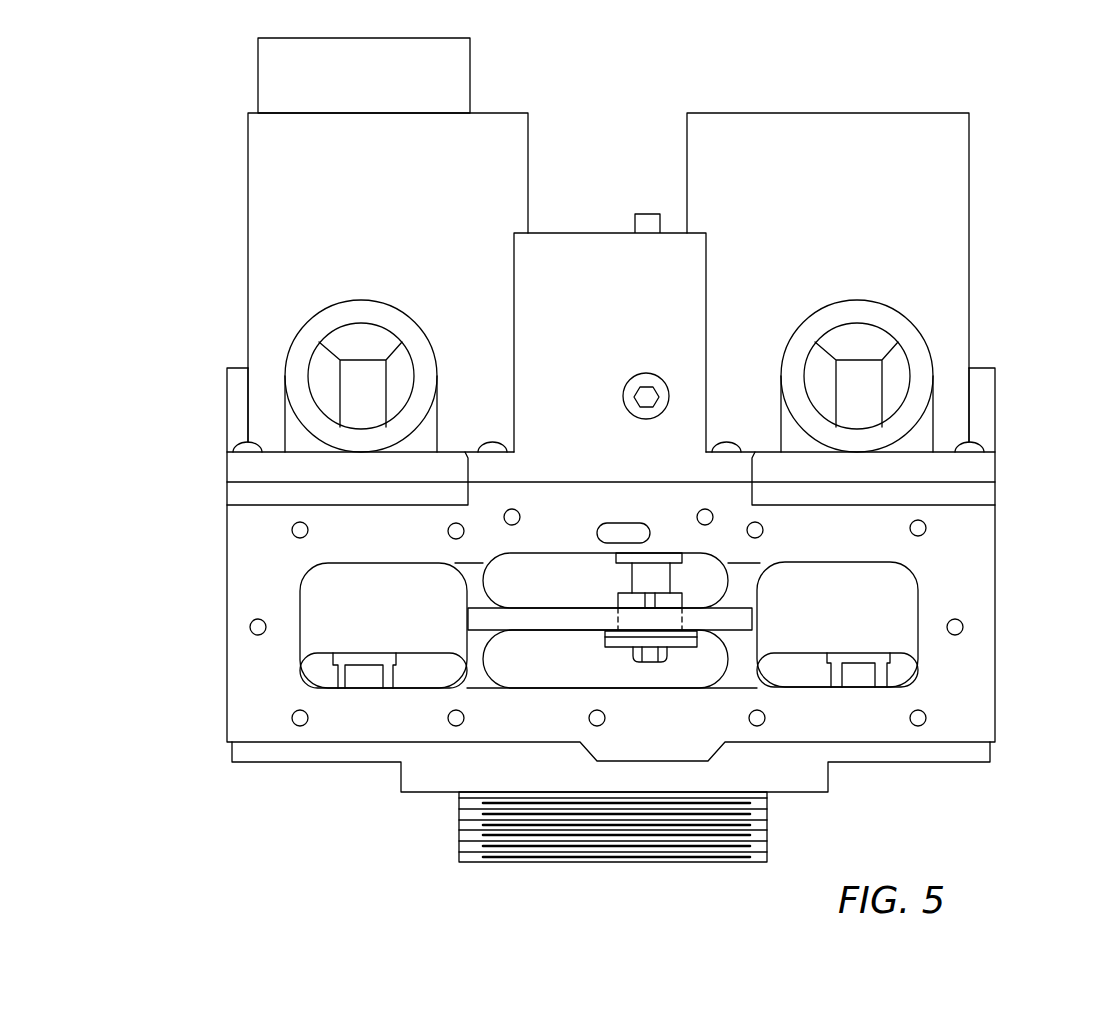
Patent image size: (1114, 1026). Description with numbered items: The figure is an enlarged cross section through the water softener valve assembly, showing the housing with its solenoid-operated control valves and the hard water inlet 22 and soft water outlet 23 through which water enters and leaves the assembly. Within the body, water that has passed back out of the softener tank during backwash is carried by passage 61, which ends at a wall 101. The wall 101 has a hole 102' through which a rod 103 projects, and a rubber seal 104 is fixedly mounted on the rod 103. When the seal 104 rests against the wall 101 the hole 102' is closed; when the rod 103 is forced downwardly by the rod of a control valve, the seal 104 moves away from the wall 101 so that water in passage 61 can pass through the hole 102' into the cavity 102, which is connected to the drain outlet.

The hard water inlet 22 is at (900, 376).
The soft water outlet 23 is at (322, 380).
The passage 61 is at (902, 675).
The wall 101 is at (550, 618).
The cavity 102 is at (605, 411).
The hole 102' is at (655, 599).
The rod 103 is at (637, 577).
The rubber seal 104 is at (603, 633).